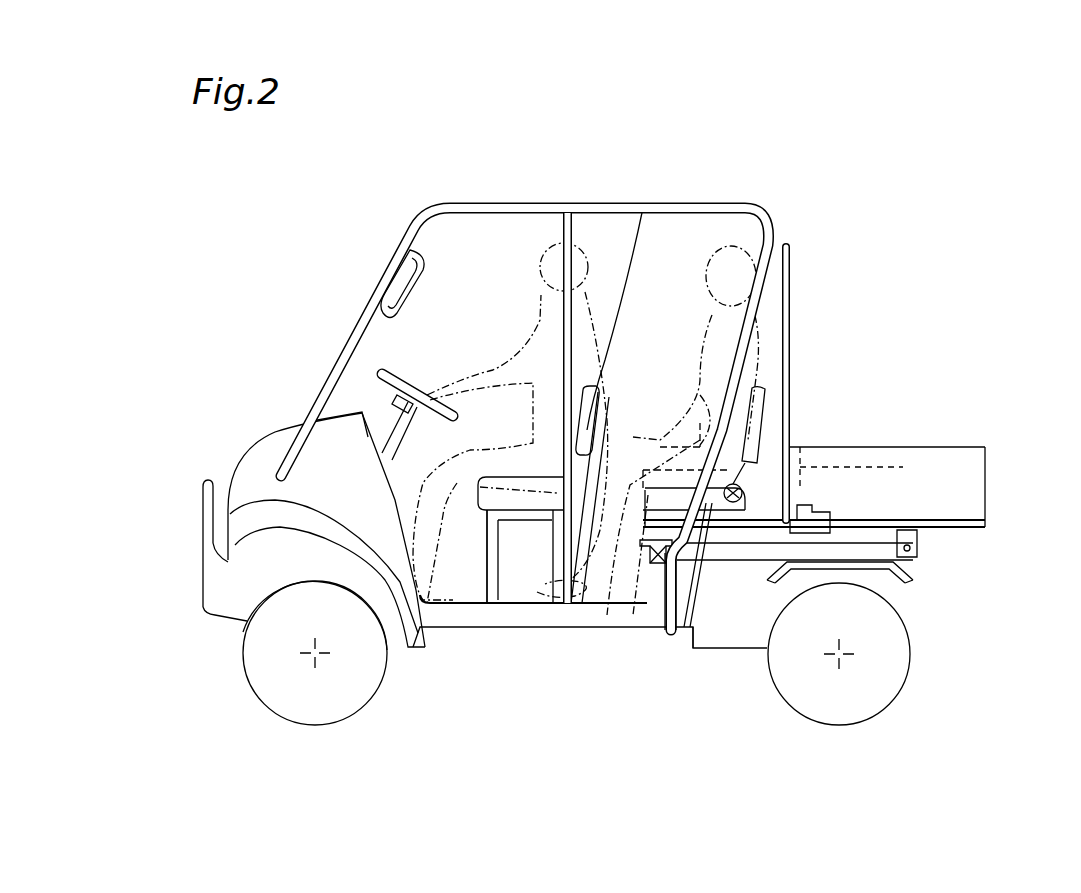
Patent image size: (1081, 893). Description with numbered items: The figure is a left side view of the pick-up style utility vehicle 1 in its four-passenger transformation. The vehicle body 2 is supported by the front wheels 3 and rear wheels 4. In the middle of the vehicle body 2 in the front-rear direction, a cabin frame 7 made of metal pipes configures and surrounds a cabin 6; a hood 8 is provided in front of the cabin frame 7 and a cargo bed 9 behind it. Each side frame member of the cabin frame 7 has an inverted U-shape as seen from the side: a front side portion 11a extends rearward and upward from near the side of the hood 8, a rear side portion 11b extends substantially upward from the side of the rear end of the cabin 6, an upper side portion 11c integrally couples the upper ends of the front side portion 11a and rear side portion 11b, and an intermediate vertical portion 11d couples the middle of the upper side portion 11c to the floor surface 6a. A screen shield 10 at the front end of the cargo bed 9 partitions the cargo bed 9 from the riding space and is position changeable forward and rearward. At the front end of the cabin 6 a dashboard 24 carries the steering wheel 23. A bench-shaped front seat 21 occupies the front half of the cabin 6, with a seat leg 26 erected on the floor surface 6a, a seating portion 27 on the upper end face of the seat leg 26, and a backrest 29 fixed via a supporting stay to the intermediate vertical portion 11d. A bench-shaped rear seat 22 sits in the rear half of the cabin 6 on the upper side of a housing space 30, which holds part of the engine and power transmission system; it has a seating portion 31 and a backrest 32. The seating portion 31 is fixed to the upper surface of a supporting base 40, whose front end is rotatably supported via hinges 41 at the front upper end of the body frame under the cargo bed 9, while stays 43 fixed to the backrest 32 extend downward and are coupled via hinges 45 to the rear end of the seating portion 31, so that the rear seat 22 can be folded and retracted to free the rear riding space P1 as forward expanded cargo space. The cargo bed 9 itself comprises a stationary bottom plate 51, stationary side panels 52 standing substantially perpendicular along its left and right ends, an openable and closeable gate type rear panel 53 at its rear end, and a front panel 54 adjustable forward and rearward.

The pick-up style utility vehicle 1 is at (792, 182).
The vehicle body 2 is at (437, 658).
The front wheel 3 is at (290, 700).
The rear wheel 4 is at (845, 718).
The cabin 6 is at (432, 348).
The floor surface 6a is at (522, 605).
The cabin frame 7 is at (575, 371).
The hood 8 is at (245, 462).
The cargo bed 9 is at (923, 455).
The screen shield 10 is at (790, 245).
The front side portion 11a is at (366, 320).
The rear side portion 11b is at (768, 296).
The upper side portion 11c is at (520, 207).
The intermediate vertical portion 11d is at (535, 270).
The bench-shaped front seat 21 is at (472, 512).
The bench-shaped rear seat 22 is at (656, 480).
The steering wheel 23 is at (385, 382).
The dashboard 24 is at (332, 413).
The seat leg 26 is at (493, 600).
The seating portion 27 is at (493, 477).
The backrest 29 is at (643, 208).
The housing space 30 is at (700, 613).
The seating portion 31 is at (687, 628).
The backrest 32 is at (758, 398).
The supporting base 40 is at (625, 582).
The hinge 41 is at (655, 600).
The stay 43 is at (780, 455).
The hinge 45 is at (743, 494).
The stationary bottom plate 51 is at (970, 530).
The stationary side panel 52 is at (930, 452).
The gate type rear panel 53 is at (986, 487).
The front panel 54 is at (873, 468).
The rear riding space P1 is at (680, 345).